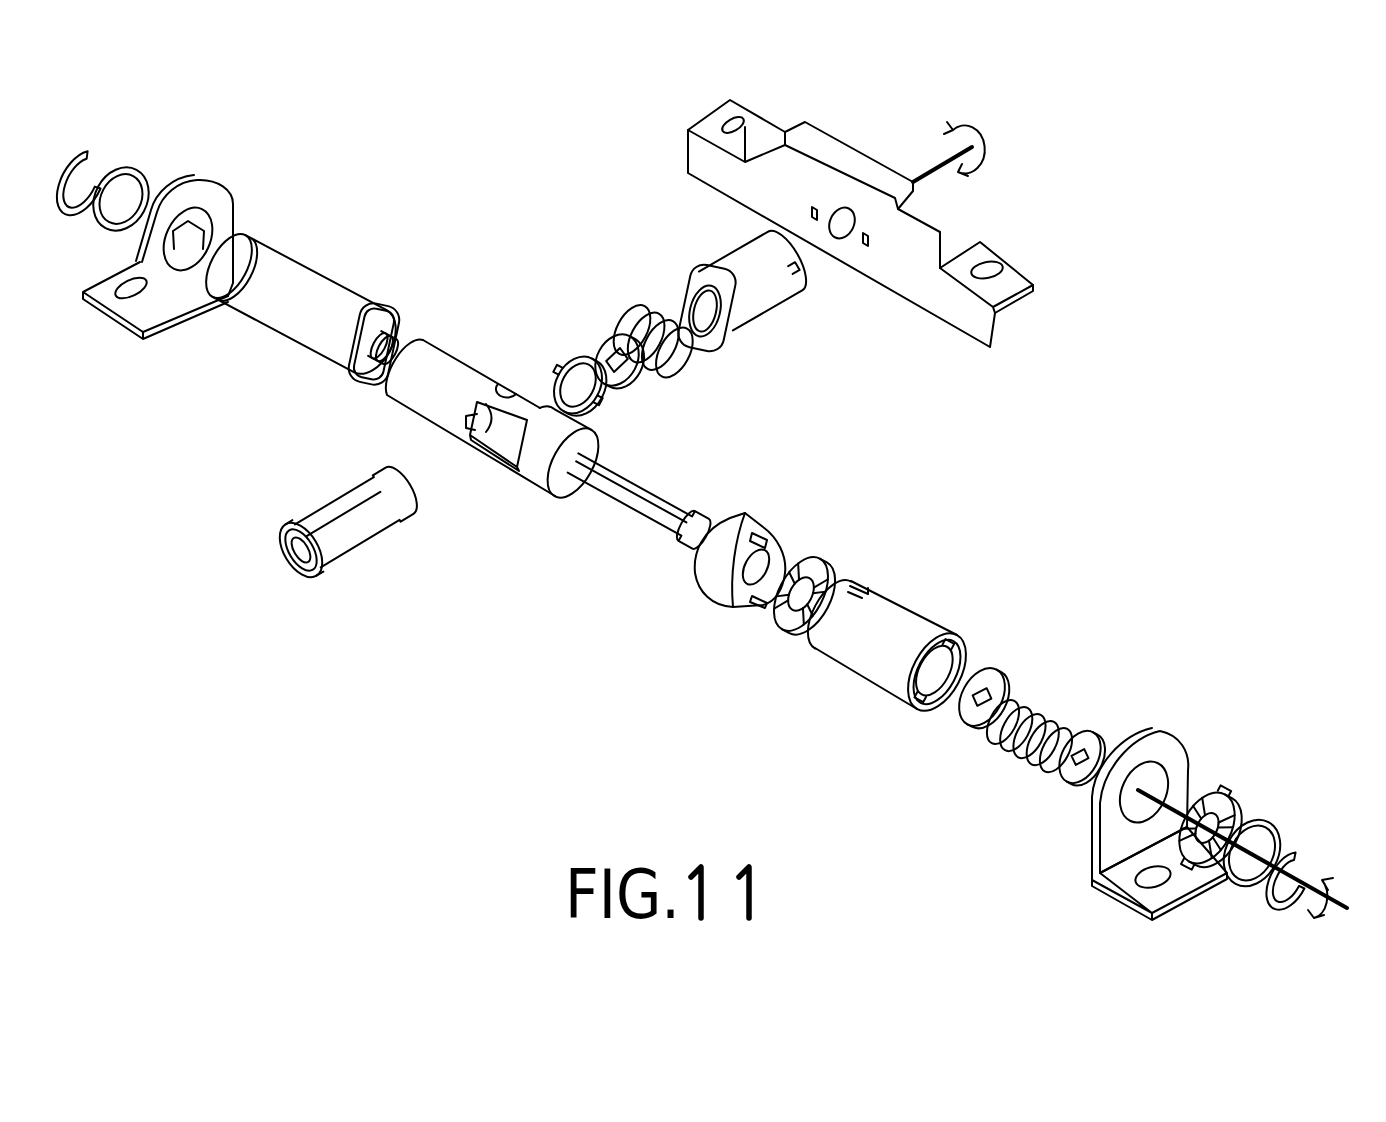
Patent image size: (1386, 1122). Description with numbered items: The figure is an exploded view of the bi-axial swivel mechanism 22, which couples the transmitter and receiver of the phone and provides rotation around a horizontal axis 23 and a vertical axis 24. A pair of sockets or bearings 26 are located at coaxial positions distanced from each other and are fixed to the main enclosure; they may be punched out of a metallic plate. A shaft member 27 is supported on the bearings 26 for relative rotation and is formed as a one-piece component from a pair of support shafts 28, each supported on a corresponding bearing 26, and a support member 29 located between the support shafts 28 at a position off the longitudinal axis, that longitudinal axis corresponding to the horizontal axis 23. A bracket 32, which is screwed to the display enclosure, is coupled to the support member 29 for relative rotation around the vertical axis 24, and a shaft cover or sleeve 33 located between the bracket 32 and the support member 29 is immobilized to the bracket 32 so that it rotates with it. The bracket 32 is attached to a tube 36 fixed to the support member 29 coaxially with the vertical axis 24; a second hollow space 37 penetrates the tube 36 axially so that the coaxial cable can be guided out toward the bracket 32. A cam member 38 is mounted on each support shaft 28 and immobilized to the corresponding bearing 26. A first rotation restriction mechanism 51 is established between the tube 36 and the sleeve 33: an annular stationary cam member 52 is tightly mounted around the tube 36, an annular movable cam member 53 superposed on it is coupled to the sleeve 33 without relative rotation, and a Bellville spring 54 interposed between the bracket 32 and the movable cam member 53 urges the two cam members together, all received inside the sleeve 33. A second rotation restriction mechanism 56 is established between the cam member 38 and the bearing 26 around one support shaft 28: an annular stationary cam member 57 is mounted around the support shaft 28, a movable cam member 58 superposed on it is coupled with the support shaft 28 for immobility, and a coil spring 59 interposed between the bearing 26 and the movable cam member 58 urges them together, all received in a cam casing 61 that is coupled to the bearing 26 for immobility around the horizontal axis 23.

The bi-axial swivel mechanism 22 is at (540, 636).
The horizontal axis 23 is at (1317, 877).
The vertical axis 24 is at (927, 172).
The bearing 26 is at (215, 197).
The shaft member 27 is at (484, 480).
The support shaft 28 is at (382, 366).
The support member 29 is at (490, 377).
The bracket 32 is at (890, 287).
The sleeve 33 is at (748, 320).
The tube 36 is at (338, 502).
The second hollow space 37 is at (310, 578).
The cam member 38 is at (323, 273).
The first rotation restriction mechanism 51 is at (515, 295).
The stationary cam member 52 is at (610, 343).
The movable cam member 53 is at (598, 402).
The Bellville spring 54 is at (682, 374).
The second rotation restriction mechanism 56 is at (1029, 536).
The stationary cam member 57 is at (817, 563).
The movable cam member 58 is at (988, 668).
The coil spring 59 is at (1038, 704).
The cam casing 61 is at (873, 678).